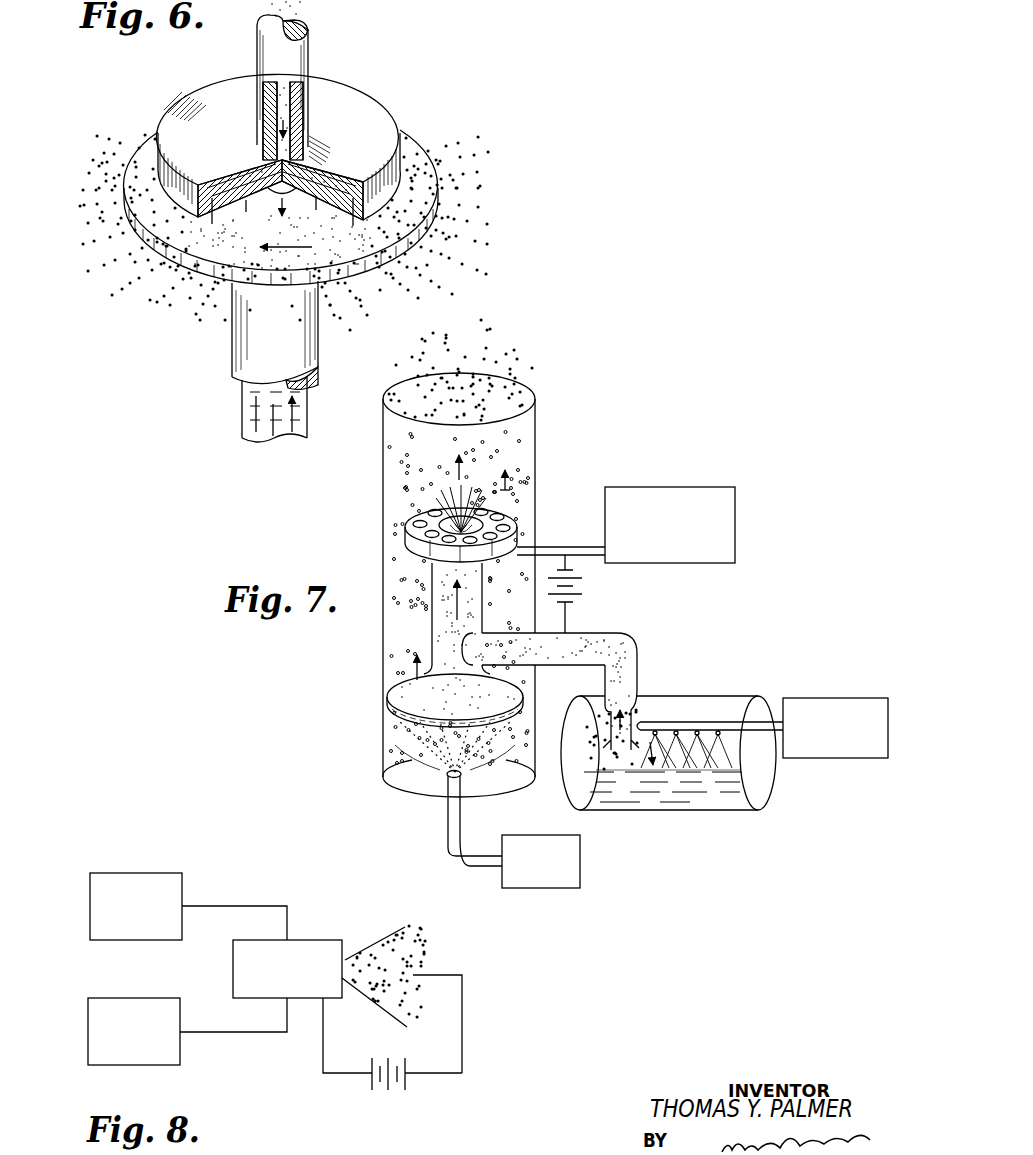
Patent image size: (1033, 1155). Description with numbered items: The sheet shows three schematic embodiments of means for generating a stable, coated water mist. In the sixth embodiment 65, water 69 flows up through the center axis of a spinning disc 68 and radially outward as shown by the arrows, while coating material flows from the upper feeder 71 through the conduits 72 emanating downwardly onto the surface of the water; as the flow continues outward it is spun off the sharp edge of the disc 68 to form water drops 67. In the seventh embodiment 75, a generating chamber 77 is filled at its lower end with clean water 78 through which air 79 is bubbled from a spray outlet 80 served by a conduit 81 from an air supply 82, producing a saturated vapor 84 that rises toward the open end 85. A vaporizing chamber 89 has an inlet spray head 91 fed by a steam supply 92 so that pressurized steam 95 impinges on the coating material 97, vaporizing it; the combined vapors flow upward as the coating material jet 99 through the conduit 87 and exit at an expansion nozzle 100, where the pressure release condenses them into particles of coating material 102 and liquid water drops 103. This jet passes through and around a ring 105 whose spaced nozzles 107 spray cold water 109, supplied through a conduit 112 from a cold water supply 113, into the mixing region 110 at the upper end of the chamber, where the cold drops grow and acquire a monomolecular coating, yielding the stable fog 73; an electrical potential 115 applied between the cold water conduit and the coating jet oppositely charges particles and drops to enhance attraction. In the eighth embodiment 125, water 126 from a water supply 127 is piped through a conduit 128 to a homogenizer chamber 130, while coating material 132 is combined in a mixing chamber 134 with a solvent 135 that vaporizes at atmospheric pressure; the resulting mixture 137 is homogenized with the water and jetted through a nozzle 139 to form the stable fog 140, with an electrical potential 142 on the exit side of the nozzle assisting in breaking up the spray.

In FIG. 6, the sixth embodiment 65 is at (442, 72).
In FIG. 6, the water drops 67 is at (420, 280).
In FIG. 6, the spinning disc 68 is at (197, 253).
In FIG. 6, the water 69 is at (285, 237).
In FIG. 6, the upper feeder 71 is at (388, 127).
In FIG. 6, the conduits 72 is at (240, 165).
In FIG. 7, the stable fog 73 is at (472, 396).
In FIG. 7, the seventh embodiment 75 is at (580, 445).
In FIG. 7, the generating chamber 77 is at (537, 425).
In FIG. 7, the clean water 78 is at (520, 717).
In FIG. 7, the air 79 is at (488, 755).
In FIG. 7, the spray outlet 80 is at (435, 780).
In FIG. 7, the conduit 81 is at (447, 847).
In FIG. 7, the air supply 82 is at (577, 853).
In FIG. 7, the saturated vapor 84 is at (397, 682).
In FIG. 7, the open end 85 is at (537, 396).
In FIG. 7, the conduit 87 is at (630, 648).
In FIG. 7, the vaporizing chamber 89 is at (740, 702).
In FIG. 7, the inlet spray head 91 is at (703, 720).
In FIG. 7, the steam supply 92 is at (838, 698).
In FIG. 7, the pressurized steam 95 is at (663, 745).
In FIG. 7, the coating material 97 is at (627, 800).
In FIG. 7, the coating material jet 99 is at (457, 593).
In FIG. 7, the expansion nozzle 100 is at (407, 520).
In FIG. 7, the particles of coating material 102 is at (480, 460).
In FIG. 7, the liquid water drops 103 is at (518, 513).
In FIG. 7, the ring 105 is at (408, 543).
In FIG. 7, the nozzles 107 is at (497, 517).
In FIG. 7, the cold water 109 is at (493, 475).
In FIG. 7, the mixing region 110 is at (385, 400).
In FIG. 7, the conduit 112 is at (577, 547).
In FIG. 7, the cold water supply 113 is at (703, 487).
In FIG. 7, the electrical potential 115 is at (580, 587).
In FIG. 8, the eighth embodiment 125 is at (313, 925).
In FIG. 8, the water 126 is at (83, 1043).
In FIG. 8, the water supply 127 is at (172, 1048).
In FIG. 8, the conduit 128 is at (245, 1033).
In FIG. 8, the homogenizer chamber 130 is at (233, 990).
In FIG. 8, the coating material 132 is at (88, 885).
In FIG. 8, the mixing chamber 134 is at (177, 880).
In FIG. 8, the solvent 135 is at (83, 930).
In FIG. 8, the mixture 137 is at (245, 906).
In FIG. 8, the nozzle 139 is at (385, 938).
In FIG. 8, the stable fog 140 is at (410, 972).
In FIG. 8, the electrical potential 142 is at (398, 1095).